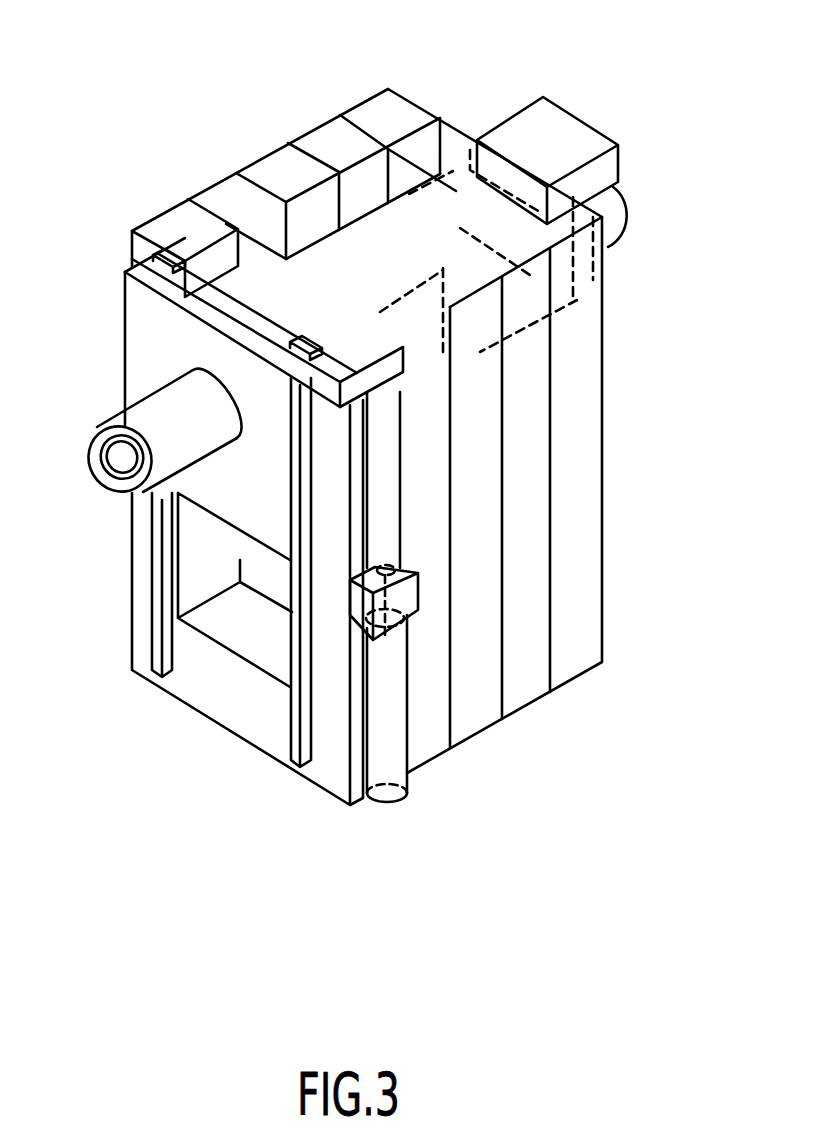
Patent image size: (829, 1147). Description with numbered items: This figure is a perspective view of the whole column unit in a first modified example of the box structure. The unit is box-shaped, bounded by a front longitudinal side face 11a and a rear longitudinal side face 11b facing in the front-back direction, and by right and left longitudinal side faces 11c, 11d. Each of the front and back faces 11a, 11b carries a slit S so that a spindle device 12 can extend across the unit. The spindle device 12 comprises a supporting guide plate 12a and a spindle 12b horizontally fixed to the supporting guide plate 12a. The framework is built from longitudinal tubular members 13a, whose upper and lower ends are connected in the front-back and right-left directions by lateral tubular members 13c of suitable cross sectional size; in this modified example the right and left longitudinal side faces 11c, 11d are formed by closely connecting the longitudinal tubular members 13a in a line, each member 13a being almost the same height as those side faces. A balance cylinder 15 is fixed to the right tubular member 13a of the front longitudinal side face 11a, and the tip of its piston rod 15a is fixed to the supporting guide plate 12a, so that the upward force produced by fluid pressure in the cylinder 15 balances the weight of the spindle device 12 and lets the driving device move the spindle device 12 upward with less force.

The front longitudinal side face 11a is at (138, 593).
The longitudinal side face 11b is at (455, 102).
The left longitudinal side face 11c is at (232, 156).
The right longitudinal side face 11d is at (537, 518).
The spindle device 12 is at (583, 145).
The supporting guide plate 12a is at (150, 344).
The spindle 12b is at (113, 467).
The longitudinal tubular member 13a is at (172, 205).
The lateral tubular member 13c is at (508, 160).
The balance cylinder 15 is at (392, 647).
The piston rod 15a is at (387, 445).
The slit S is at (382, 185).